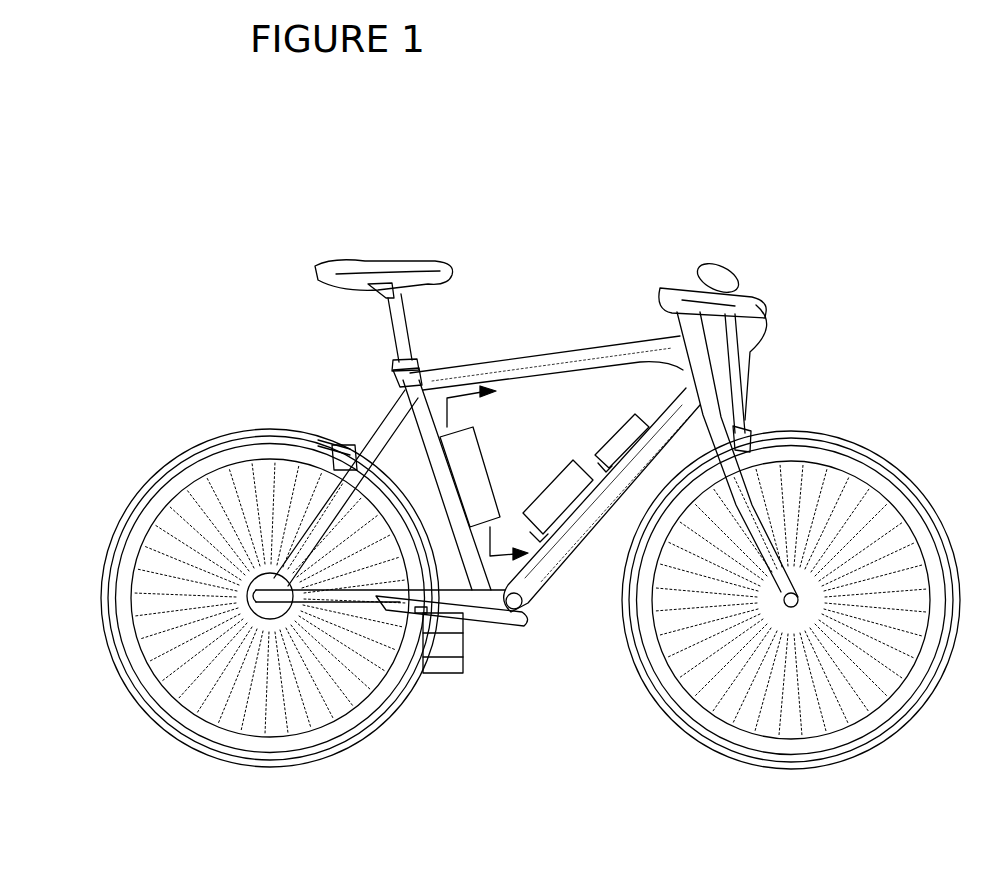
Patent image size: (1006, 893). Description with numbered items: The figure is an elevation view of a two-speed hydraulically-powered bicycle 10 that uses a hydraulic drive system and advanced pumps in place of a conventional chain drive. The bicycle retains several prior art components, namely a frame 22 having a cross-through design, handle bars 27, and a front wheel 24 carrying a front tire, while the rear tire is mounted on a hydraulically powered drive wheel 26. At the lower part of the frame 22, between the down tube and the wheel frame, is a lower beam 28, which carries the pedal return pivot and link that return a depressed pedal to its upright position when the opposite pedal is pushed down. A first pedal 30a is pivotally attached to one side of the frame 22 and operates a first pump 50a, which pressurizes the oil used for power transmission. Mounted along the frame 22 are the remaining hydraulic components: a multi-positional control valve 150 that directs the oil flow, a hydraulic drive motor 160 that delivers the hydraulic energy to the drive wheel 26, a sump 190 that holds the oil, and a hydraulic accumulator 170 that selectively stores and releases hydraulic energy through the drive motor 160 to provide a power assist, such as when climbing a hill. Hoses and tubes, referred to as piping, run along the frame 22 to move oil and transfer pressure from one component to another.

The hydraulically-powered bicycle 10 is at (183, 225).
The frame 22 is at (567, 352).
The front wheel 24 is at (892, 460).
The hydraulically powered drive wheel 26 is at (153, 482).
The handle bars 27 is at (713, 268).
The lower beam 28 is at (503, 597).
The first pedal 30a is at (490, 627).
The first pump 50a is at (440, 663).
The multi-positional control valve 150 is at (637, 427).
The hydraulic drive motor 160 is at (258, 566).
The hydraulic accumulator 170 is at (460, 443).
The sump 190 is at (568, 482).